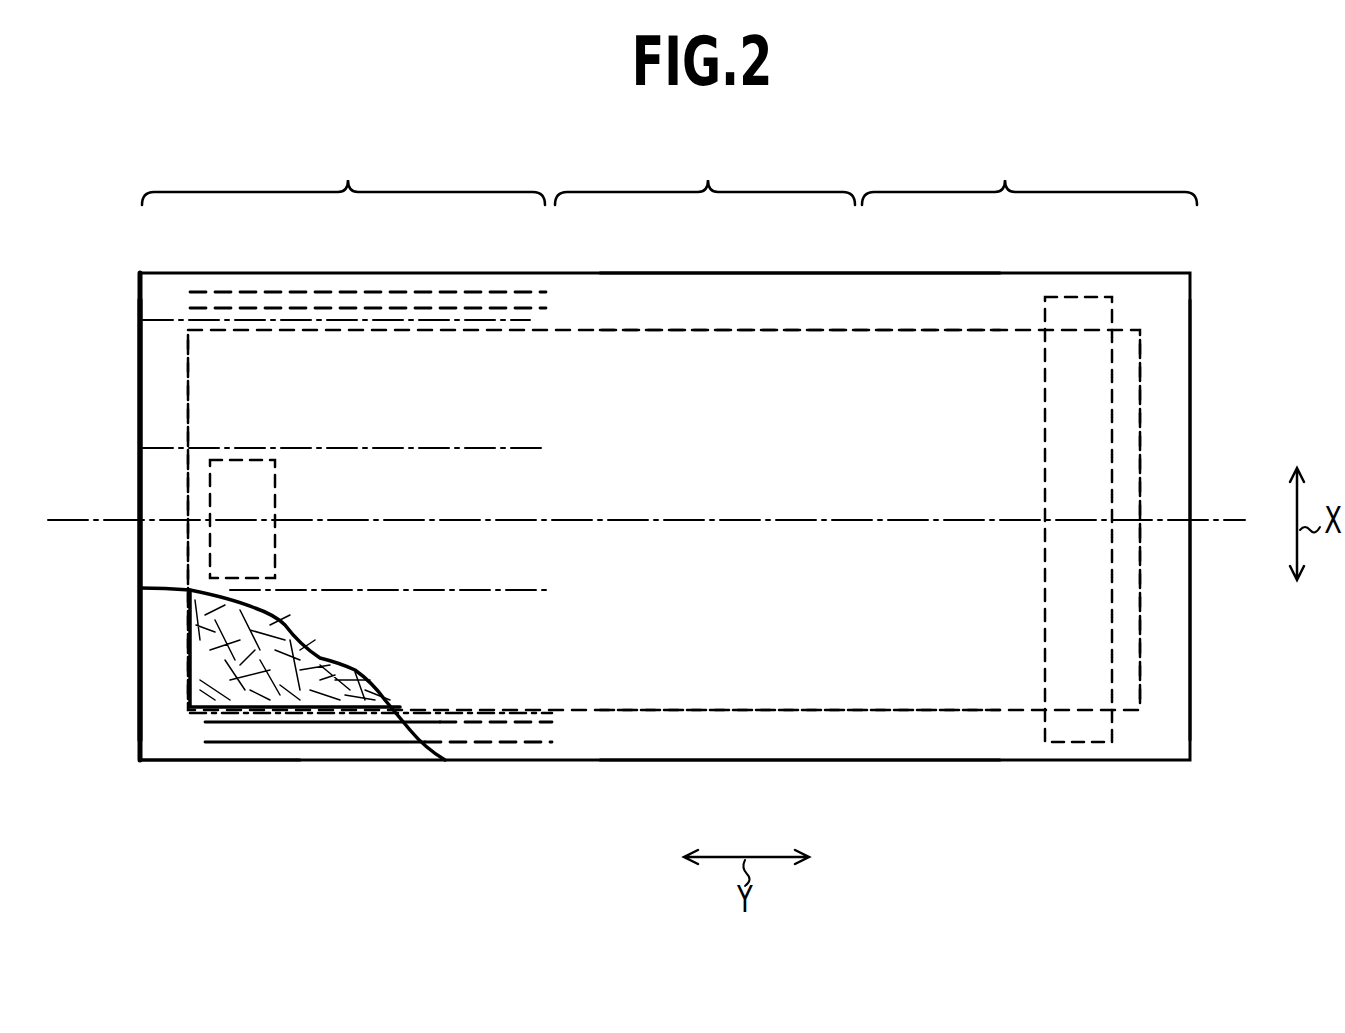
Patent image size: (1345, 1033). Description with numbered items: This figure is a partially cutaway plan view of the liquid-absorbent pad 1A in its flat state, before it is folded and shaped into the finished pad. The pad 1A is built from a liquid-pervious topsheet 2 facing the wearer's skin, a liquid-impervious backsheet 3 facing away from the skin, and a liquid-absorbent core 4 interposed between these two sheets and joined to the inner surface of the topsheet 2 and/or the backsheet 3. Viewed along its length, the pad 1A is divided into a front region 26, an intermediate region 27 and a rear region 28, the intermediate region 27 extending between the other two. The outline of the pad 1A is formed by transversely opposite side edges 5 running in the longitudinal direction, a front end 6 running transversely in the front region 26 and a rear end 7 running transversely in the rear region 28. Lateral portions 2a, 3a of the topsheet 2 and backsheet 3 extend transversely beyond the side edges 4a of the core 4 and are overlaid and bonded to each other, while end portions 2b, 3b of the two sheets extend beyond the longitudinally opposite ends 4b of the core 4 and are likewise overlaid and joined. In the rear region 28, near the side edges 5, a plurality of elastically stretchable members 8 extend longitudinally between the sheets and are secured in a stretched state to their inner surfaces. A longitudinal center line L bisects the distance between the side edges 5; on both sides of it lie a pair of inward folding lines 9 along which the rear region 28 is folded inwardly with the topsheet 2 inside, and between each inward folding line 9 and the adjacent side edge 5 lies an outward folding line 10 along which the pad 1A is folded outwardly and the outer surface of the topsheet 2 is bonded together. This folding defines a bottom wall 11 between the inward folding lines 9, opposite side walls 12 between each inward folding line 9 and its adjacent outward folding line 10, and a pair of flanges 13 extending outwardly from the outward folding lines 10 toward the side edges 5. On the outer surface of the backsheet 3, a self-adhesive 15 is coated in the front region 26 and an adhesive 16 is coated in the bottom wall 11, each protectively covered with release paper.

The liquid-absorbent pad 1A is at (1193, 273).
The liquid-pervious topsheet 2 is at (905, 375).
The lateral portion of the topsheet 2a is at (820, 312).
The end portion of the topsheet 2b is at (158, 363).
The liquid-impervious backsheet 3 is at (168, 692).
The lateral portion of the backsheet 3a is at (975, 318).
The end portion of the backsheet 3b is at (158, 601).
The liquid-absorbent core 4 is at (228, 693).
The transversely opposite side edges of the core 4a is at (672, 330).
The longitudinally opposite ends of the core 4b is at (207, 630).
The transversely opposite side edges 5 is at (742, 273).
The front end 6 is at (1192, 366).
The rear end 7 is at (142, 423).
The elastically stretchable members 8 is at (396, 307).
The inward folding lines 9 is at (508, 448).
The outward folding lines 10 is at (488, 317).
The bottom wall 11 is at (385, 472).
The side walls 12 is at (272, 368).
The flanges 13 is at (427, 303).
The self-adhesive 15 is at (1095, 372).
The adhesive 16 is at (213, 482).
The front region 26 is at (1029, 170).
The intermediate region 27 is at (705, 170).
The rear region 28 is at (343, 171).
The longitudinal center line L is at (1195, 522).